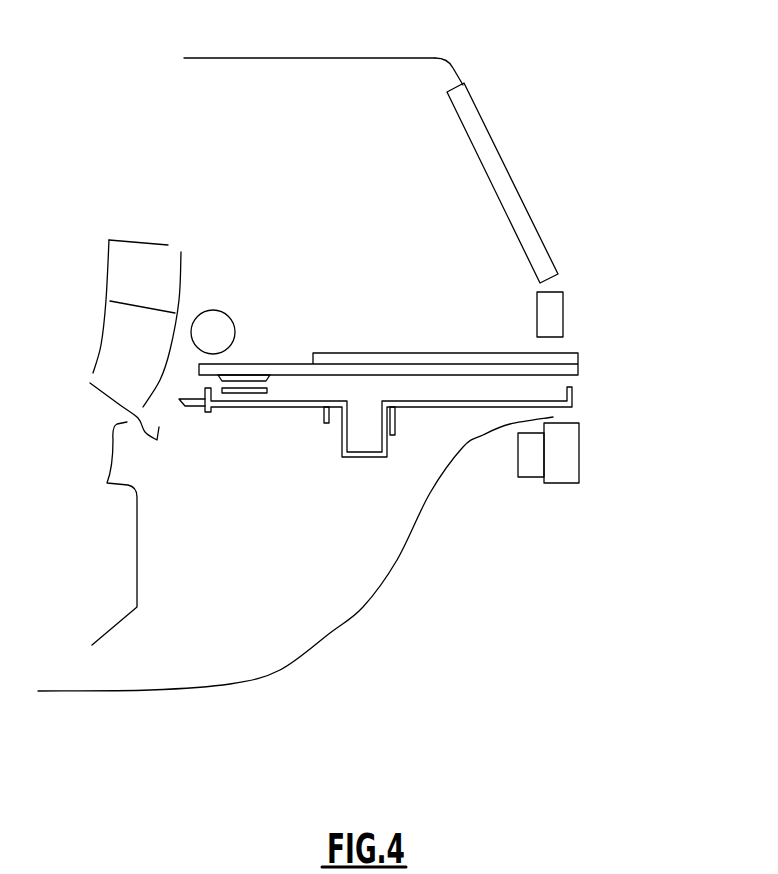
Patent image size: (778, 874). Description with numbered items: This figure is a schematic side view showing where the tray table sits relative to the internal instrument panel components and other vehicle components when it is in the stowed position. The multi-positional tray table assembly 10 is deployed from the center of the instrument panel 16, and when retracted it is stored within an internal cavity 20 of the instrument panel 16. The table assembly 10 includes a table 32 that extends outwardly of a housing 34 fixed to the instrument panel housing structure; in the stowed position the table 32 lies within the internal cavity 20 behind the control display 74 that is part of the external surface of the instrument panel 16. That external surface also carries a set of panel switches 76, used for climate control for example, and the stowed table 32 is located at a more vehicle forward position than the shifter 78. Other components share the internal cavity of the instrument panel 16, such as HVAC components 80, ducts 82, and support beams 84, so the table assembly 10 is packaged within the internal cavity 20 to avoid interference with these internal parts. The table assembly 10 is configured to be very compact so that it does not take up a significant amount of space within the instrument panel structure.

The multi-positional tray table assembly 10 is at (592, 391).
The instrument panel 16 is at (447, 60).
The internal cavity 20 is at (315, 98).
The table 32 is at (579, 357).
The housing 34 is at (440, 407).
The control display 74 is at (500, 153).
The panel switches 76 is at (563, 305).
The shifter 78 is at (570, 483).
The HVAC components 80 is at (137, 578).
The ducts 82 is at (133, 240).
The support beams 84 is at (232, 316).